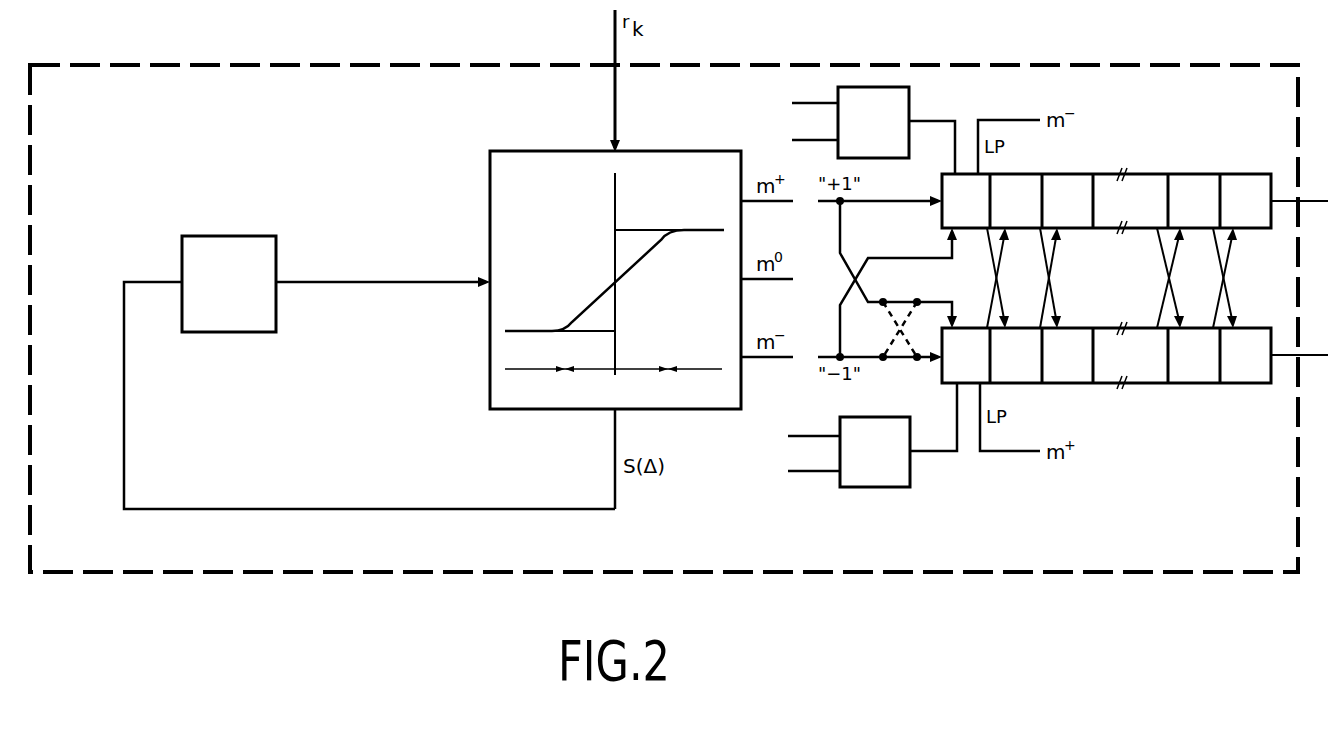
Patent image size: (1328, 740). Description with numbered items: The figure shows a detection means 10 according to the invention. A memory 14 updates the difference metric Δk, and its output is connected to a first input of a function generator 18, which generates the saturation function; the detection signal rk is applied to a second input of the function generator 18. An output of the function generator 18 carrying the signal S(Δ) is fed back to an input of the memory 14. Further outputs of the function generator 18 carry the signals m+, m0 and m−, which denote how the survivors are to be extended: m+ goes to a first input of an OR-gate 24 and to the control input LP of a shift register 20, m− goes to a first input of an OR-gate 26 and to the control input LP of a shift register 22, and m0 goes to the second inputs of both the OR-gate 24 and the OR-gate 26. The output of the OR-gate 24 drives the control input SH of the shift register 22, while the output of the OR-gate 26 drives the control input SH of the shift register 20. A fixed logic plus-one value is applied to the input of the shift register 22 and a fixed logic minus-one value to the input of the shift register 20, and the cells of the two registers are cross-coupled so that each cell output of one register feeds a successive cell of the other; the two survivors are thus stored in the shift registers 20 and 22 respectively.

The detection means 10 is at (434, 43).
The memory 14 is at (229, 332).
The function generator 18 is at (490, 392).
The shift register 20 is at (1150, 384).
The shift register 22 is at (1085, 174).
The OR-gate 24 is at (909, 99).
The OR-gate 26 is at (872, 490).